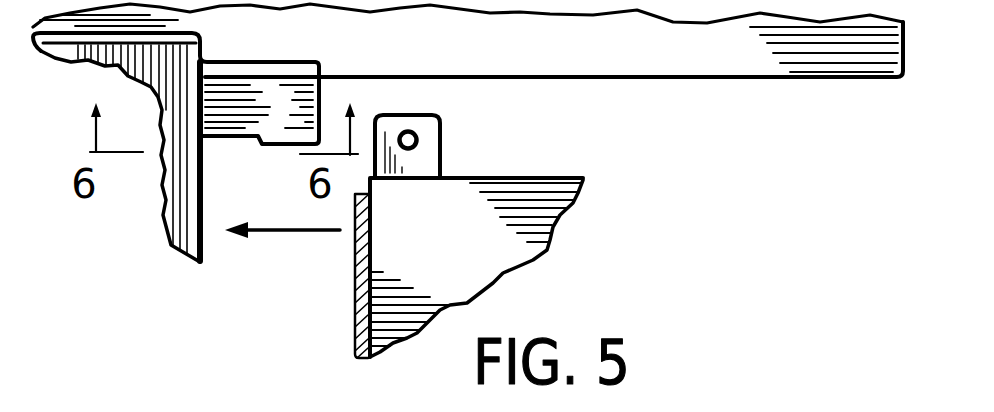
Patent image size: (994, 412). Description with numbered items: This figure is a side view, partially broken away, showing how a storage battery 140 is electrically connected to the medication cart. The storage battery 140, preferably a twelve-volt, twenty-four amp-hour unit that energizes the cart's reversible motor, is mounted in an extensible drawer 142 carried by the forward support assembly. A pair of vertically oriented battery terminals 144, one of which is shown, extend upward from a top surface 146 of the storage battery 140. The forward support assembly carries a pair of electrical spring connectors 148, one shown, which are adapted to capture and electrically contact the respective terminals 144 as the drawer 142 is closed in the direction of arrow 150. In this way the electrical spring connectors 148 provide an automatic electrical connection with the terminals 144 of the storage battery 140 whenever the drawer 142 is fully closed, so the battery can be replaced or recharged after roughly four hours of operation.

The storage battery 140 is at (459, 242).
The extensible drawer 142 is at (353, 303).
The battery terminals 144 is at (442, 133).
The top surface 146 is at (557, 177).
The electrical spring connectors 148 is at (270, 93).
The arrow 150 is at (270, 232).